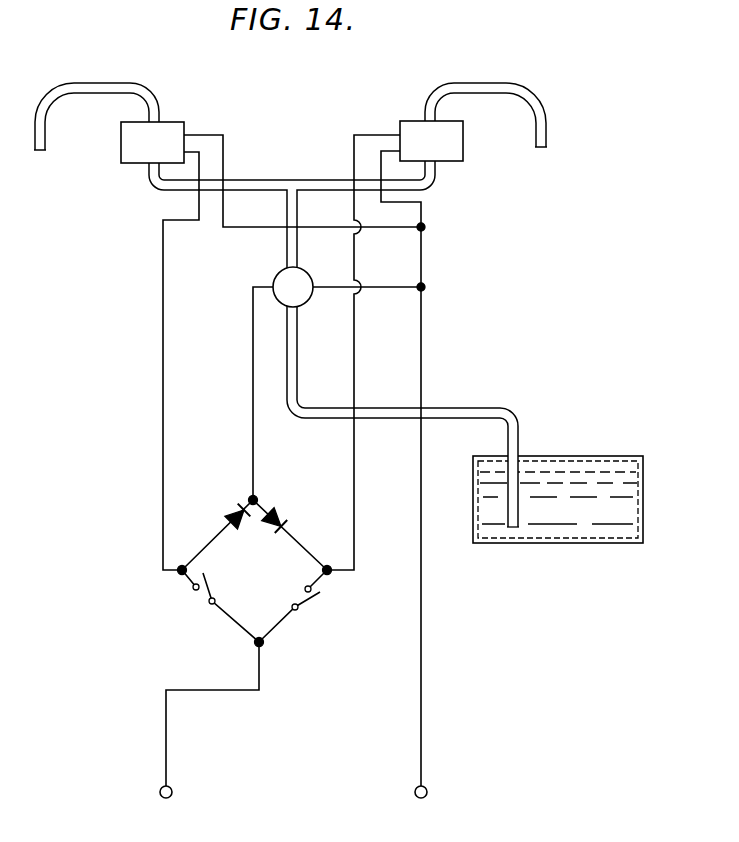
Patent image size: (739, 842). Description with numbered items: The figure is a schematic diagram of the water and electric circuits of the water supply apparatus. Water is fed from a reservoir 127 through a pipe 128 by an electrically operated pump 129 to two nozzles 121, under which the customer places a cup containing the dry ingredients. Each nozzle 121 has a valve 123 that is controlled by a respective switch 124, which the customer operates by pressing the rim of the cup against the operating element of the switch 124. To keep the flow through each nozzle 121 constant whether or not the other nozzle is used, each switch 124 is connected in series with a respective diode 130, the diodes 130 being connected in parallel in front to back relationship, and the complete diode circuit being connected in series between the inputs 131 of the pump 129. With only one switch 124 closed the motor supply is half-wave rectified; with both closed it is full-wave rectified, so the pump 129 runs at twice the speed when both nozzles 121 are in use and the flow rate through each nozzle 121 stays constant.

The nozzle 121 is at (88, 84).
The valve 123 is at (170, 132).
The switch 124 is at (203, 590).
The reservoir 127 is at (556, 545).
The pipe 128 is at (517, 416).
The pump 129 is at (282, 278).
The diode 130 is at (231, 512).
The inputs of the pump 131 is at (173, 793).